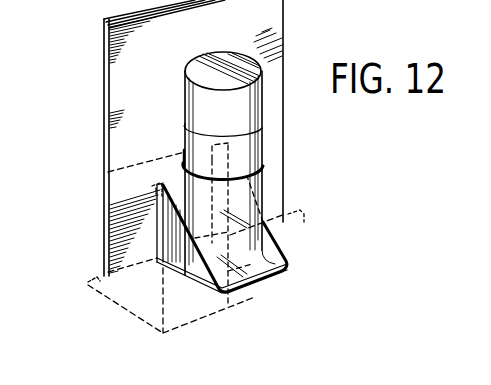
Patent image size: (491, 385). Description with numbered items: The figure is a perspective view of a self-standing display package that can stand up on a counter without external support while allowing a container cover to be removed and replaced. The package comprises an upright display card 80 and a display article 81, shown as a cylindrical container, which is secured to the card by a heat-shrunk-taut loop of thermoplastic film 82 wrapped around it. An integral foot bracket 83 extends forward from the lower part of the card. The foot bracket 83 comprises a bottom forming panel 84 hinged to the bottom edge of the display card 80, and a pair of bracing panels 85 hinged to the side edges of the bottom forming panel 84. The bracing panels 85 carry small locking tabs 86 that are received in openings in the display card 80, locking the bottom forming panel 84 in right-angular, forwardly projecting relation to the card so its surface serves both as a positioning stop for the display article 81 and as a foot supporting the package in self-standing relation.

The display card 80 is at (107, 88).
The display article 81 is at (250, 147).
The thermoplastic film 82 is at (263, 203).
The foot bracket 83 is at (289, 249).
The bottom forming panel 84 is at (272, 272).
The bracing panels 85 is at (165, 272).
The locking tabs 86 is at (150, 187).